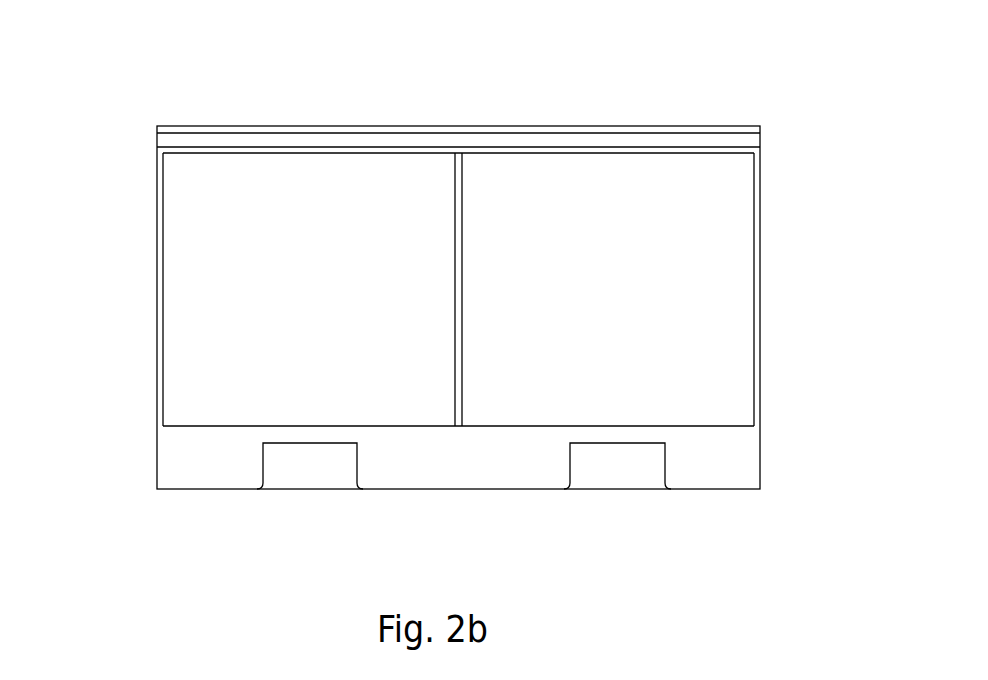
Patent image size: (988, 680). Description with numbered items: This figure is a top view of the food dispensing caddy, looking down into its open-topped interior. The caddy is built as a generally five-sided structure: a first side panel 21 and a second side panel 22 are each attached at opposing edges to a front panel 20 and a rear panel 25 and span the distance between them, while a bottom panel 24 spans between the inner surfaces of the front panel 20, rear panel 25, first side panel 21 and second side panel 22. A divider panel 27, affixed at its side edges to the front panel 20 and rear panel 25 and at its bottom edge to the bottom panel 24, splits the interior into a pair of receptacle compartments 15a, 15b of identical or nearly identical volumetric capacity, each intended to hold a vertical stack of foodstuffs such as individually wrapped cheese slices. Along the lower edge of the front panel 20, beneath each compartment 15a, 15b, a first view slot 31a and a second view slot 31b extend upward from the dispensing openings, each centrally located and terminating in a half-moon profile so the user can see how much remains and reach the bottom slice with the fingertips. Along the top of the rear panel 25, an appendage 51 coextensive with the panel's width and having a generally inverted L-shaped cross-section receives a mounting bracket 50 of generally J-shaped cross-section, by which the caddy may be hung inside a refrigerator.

The first receptacle compartment 15a is at (213, 258).
The second receptacle compartment 15b is at (680, 232).
The front panel 20 is at (455, 477).
The first side panel 21 is at (155, 378).
The second side panel 22 is at (762, 403).
The bottom panel 24 is at (235, 327).
The rear panel 25 is at (580, 147).
The divider panel 27 is at (460, 343).
The first view slot 31a is at (312, 473).
The second view slot 31b is at (617, 477).
The mounting bracket 50 is at (498, 127).
The appendage 51 is at (432, 140).